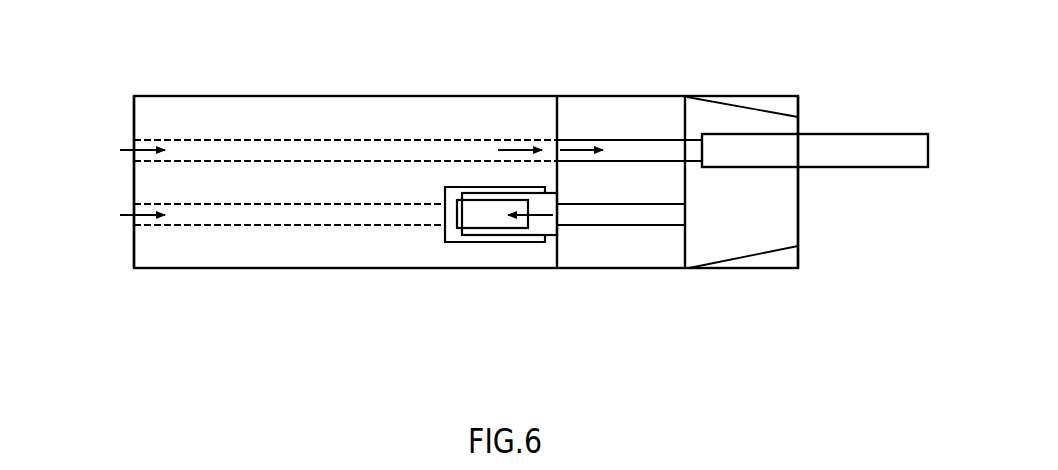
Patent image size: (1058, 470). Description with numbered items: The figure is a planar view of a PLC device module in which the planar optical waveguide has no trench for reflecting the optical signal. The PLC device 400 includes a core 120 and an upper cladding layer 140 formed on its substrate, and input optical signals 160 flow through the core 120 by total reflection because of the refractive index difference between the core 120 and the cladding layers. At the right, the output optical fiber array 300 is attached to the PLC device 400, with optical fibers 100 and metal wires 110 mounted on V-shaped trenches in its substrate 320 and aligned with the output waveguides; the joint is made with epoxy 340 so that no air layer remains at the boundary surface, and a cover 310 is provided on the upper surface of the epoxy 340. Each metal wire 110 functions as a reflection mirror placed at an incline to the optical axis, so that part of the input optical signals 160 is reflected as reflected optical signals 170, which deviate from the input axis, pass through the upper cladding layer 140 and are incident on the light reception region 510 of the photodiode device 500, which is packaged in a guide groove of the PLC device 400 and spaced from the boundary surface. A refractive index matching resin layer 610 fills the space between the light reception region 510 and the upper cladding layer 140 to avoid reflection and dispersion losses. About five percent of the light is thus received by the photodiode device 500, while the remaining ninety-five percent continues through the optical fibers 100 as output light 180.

The optical fiber 100 is at (840, 138).
The metal wire 110 is at (595, 224).
The core 120 is at (232, 220).
The upper cladding layer 140 is at (168, 255).
The input optical signal 160 is at (128, 152).
The reflected optical signal 170 is at (522, 235).
The output light 180 is at (527, 152).
The output optical fiber array 300 is at (653, 268).
The cover 310 is at (658, 108).
The substrate 320 is at (779, 255).
The epoxy 340 is at (713, 250).
The PLC device 400 is at (285, 97).
The photodiode device 500 is at (455, 242).
The light reception region 510 is at (488, 228).
The refractive index matching resin layer 610 is at (548, 235).